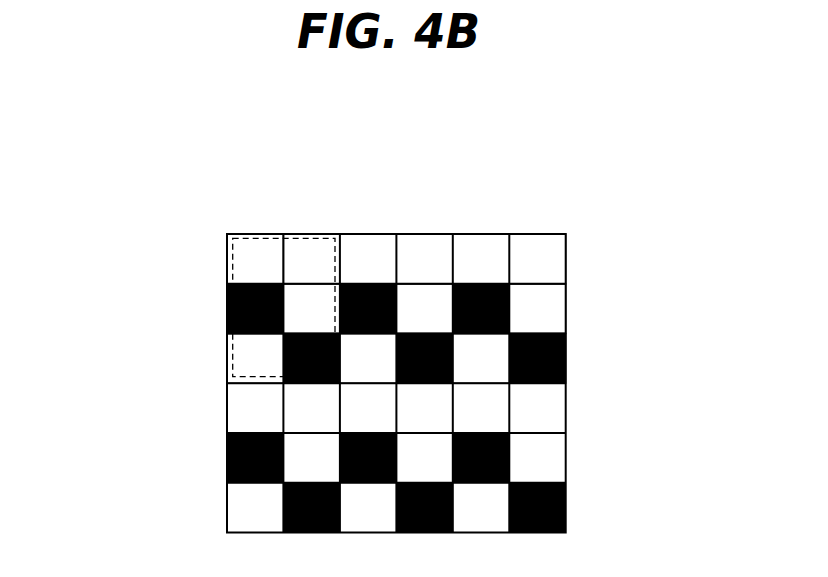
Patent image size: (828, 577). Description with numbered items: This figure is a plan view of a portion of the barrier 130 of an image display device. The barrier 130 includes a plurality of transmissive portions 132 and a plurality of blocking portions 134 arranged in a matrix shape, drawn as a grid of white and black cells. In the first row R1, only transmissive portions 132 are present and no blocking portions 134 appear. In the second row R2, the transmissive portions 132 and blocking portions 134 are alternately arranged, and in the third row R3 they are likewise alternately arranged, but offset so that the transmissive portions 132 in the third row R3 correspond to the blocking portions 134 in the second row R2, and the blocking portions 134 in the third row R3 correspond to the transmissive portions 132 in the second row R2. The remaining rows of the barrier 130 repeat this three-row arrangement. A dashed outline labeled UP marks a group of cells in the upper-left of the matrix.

The barrier 130 is at (605, 223).
The transmissive portions 132 is at (238, 258).
The blocking portions 134 is at (227, 313).
The unit pixel UP is at (260, 238).
The first row R1 is at (583, 257).
The second row R2 is at (583, 308).
The third row R3 is at (583, 358).